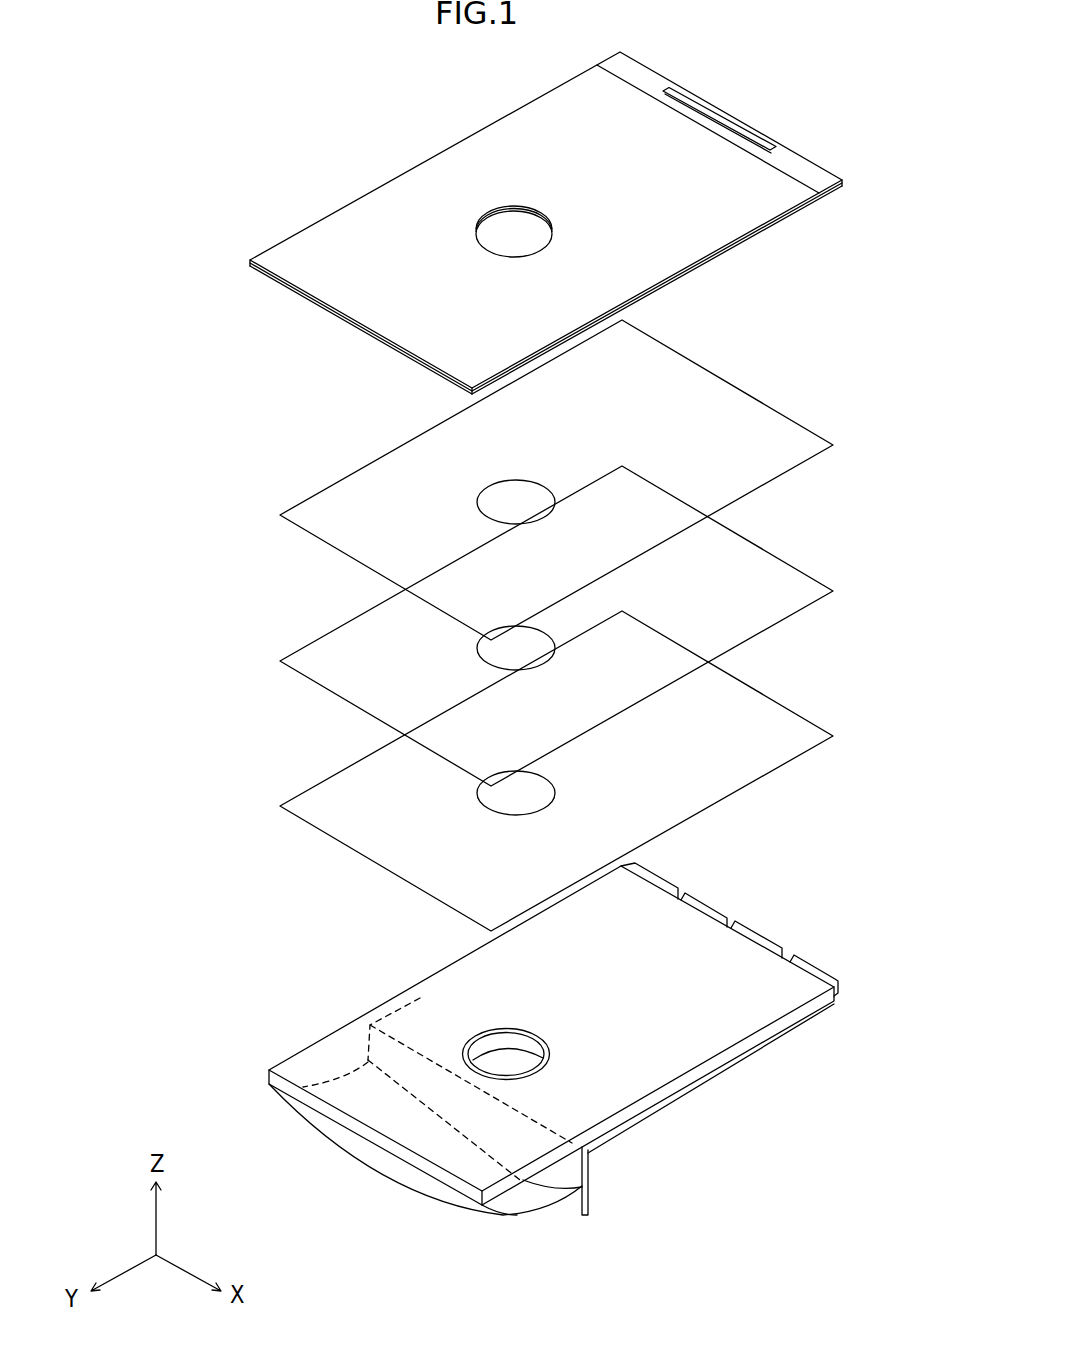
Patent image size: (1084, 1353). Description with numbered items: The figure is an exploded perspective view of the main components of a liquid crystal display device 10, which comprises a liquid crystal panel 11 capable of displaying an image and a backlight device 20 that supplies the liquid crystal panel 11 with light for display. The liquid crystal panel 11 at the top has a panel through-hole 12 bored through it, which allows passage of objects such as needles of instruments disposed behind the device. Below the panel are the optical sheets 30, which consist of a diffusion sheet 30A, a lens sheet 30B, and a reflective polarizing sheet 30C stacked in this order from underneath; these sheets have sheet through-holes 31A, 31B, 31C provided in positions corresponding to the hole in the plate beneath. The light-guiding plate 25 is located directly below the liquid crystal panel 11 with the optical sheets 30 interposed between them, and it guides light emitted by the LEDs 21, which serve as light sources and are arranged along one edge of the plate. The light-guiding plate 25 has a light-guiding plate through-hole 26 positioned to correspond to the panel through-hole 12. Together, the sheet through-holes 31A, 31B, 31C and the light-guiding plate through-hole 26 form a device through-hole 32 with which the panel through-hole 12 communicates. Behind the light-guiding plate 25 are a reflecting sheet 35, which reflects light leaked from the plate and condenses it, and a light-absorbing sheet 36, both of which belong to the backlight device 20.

The liquid crystal display device 10 is at (132, 802).
The liquid crystal panel 11 is at (302, 253).
The panel through-hole 12 is at (502, 259).
The backlight device 20 is at (178, 518).
The LEDs 21 is at (753, 937).
The light-guiding plate 25 is at (314, 1058).
The light-guiding plate through-hole 26 is at (512, 1077).
The optical sheets 30 is at (225, 800).
The diffusion sheet 30A is at (313, 806).
The lens sheet 30B is at (312, 660).
The reflective polarizing sheet 30C is at (315, 513).
The sheet through-hole 31A is at (524, 814).
The sheet through-hole 31B is at (524, 669).
The sheet through-hole 31C is at (505, 522).
The device through-hole 32 is at (888, 772).
The reflecting sheet 35 is at (393, 1178).
The light-absorbing sheet 36 is at (656, 1113).